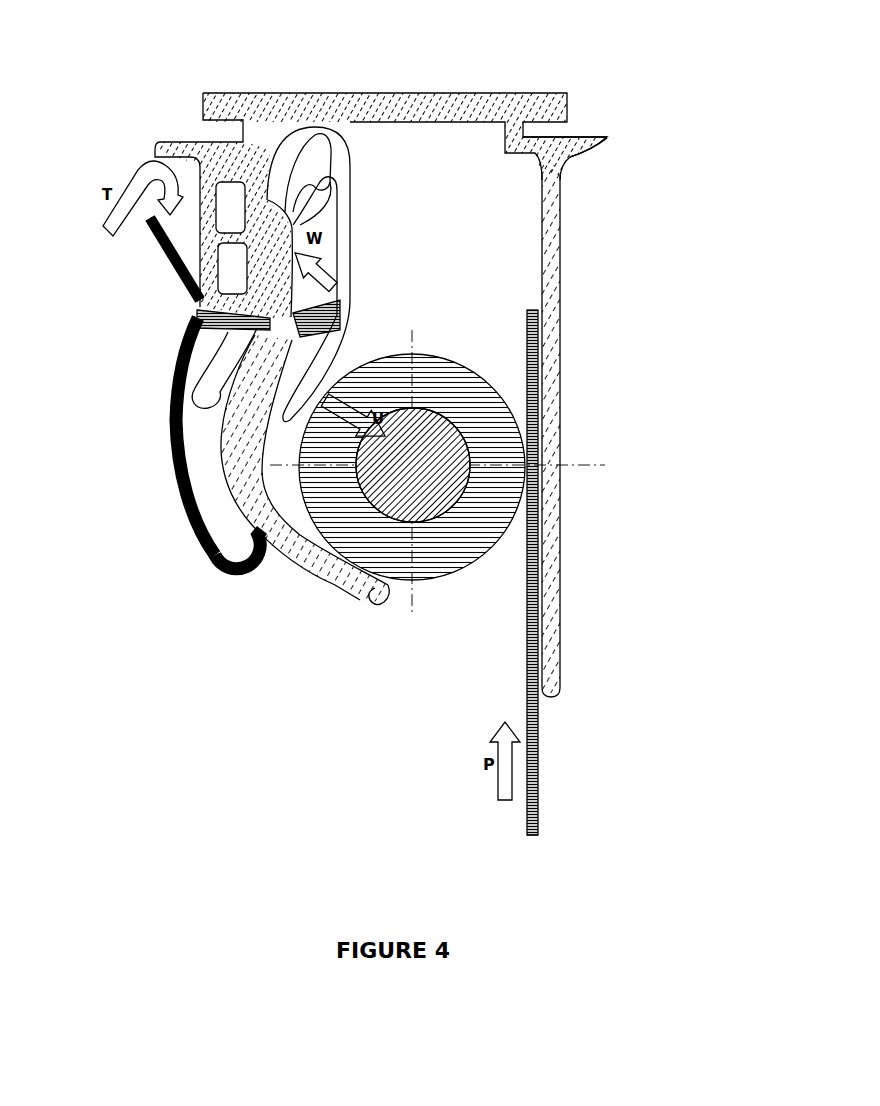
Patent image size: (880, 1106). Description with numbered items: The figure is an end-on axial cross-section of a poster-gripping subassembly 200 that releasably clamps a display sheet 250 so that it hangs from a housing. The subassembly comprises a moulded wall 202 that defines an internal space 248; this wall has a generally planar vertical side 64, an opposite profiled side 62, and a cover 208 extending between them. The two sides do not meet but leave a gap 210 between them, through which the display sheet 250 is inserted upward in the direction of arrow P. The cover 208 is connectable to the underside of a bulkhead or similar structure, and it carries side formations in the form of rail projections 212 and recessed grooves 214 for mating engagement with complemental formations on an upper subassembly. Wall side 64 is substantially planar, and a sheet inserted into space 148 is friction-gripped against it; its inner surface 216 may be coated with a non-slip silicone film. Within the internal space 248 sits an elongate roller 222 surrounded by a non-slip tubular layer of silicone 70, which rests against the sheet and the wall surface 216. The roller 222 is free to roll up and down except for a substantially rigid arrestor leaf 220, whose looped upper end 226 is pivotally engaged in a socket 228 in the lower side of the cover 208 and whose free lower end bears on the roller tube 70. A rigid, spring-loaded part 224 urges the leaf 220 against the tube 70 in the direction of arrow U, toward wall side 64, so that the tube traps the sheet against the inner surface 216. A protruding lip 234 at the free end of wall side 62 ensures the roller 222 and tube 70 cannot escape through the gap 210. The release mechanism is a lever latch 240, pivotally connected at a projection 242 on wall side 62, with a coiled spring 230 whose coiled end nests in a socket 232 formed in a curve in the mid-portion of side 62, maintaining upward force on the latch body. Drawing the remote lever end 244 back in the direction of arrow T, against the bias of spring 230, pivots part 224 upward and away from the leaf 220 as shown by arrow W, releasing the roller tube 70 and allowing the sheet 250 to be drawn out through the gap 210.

The subassembly 200 is at (176, 80).
The cover 208 is at (420, 94).
The space 148 is at (659, 52).
The recessed grooves 214 is at (562, 136).
The rail projections 212 is at (594, 143).
The moulded wall 202 is at (566, 243).
The wall side 64 is at (562, 378).
The internal space 248 is at (456, 247).
The gap 210 is at (494, 622).
The socket 228 is at (283, 162).
The looped upper end 226 is at (306, 150).
The spring-loaded part 224 is at (352, 300).
The arrestor leaf 220 is at (352, 352).
The coiled spring 230 is at (196, 353).
The socket 232 is at (182, 394).
The lever latch 240 is at (188, 473).
The projection 242 is at (229, 578).
The lever end 244 is at (163, 255).
The profiled side 62 is at (322, 579).
The protruding lip 234 is at (377, 596).
The non-slip tubular layer of silicone 70 is at (497, 531).
The roller 222 is at (457, 440).
The inner surface 216 is at (526, 650).
The display sheet 250 is at (541, 818).